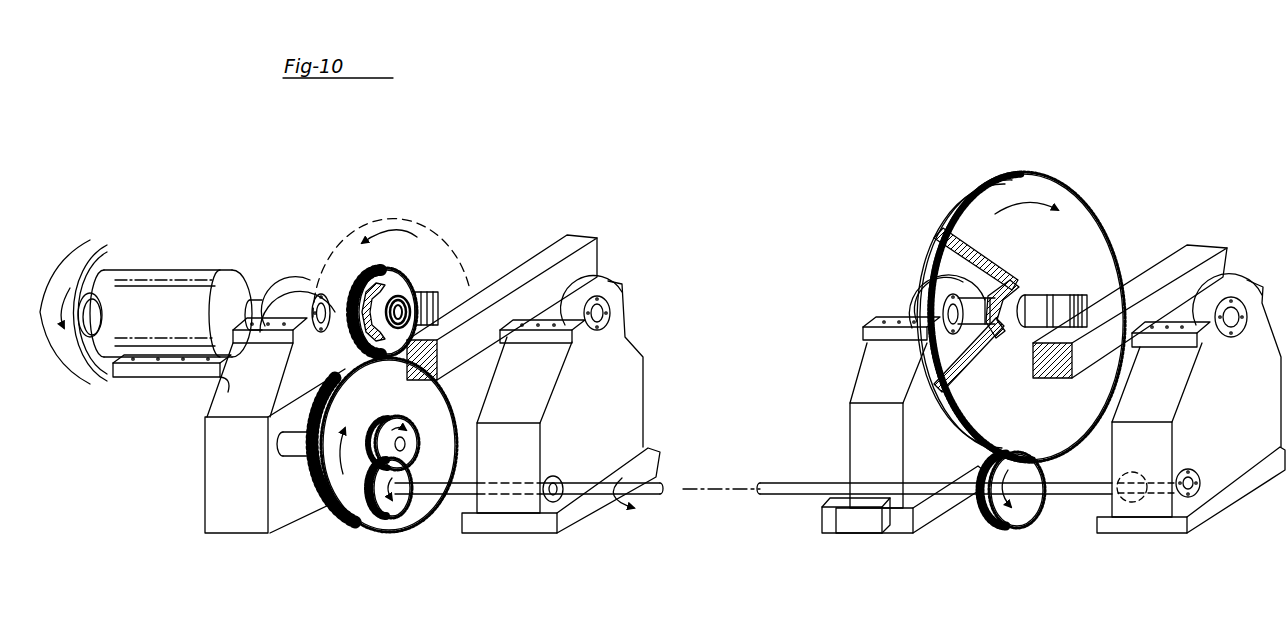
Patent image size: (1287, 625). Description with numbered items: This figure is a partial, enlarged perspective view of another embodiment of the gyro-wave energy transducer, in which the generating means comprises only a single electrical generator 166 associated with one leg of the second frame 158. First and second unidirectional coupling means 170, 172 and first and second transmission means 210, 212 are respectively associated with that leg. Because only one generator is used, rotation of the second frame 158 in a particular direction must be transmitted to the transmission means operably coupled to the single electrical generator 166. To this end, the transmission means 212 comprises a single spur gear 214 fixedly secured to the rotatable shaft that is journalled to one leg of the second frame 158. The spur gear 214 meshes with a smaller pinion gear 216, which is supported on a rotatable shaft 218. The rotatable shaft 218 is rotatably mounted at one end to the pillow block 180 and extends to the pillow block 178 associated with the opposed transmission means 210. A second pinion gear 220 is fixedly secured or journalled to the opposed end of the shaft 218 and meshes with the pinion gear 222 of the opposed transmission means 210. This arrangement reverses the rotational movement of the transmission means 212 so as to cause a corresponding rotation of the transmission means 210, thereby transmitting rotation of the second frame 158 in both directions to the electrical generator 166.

The electrical generator 166 is at (181, 253).
The first unidirectional coupling means 170 is at (453, 290).
The first transmission means 210 is at (403, 207).
The second frame 158 is at (561, 236).
The pinion gear 222 is at (350, 512).
The second pinion gear 220 is at (380, 520).
The rotatable shaft 218 is at (603, 492).
The first pillow block 178 is at (850, 527).
The pinion gear 216 is at (1025, 520).
The second pillow block 180 is at (1138, 527).
The second transmission means 212 is at (1080, 132).
The spur gear 214 is at (995, 198).
The second unidirectional coupling means 172 is at (1088, 240).